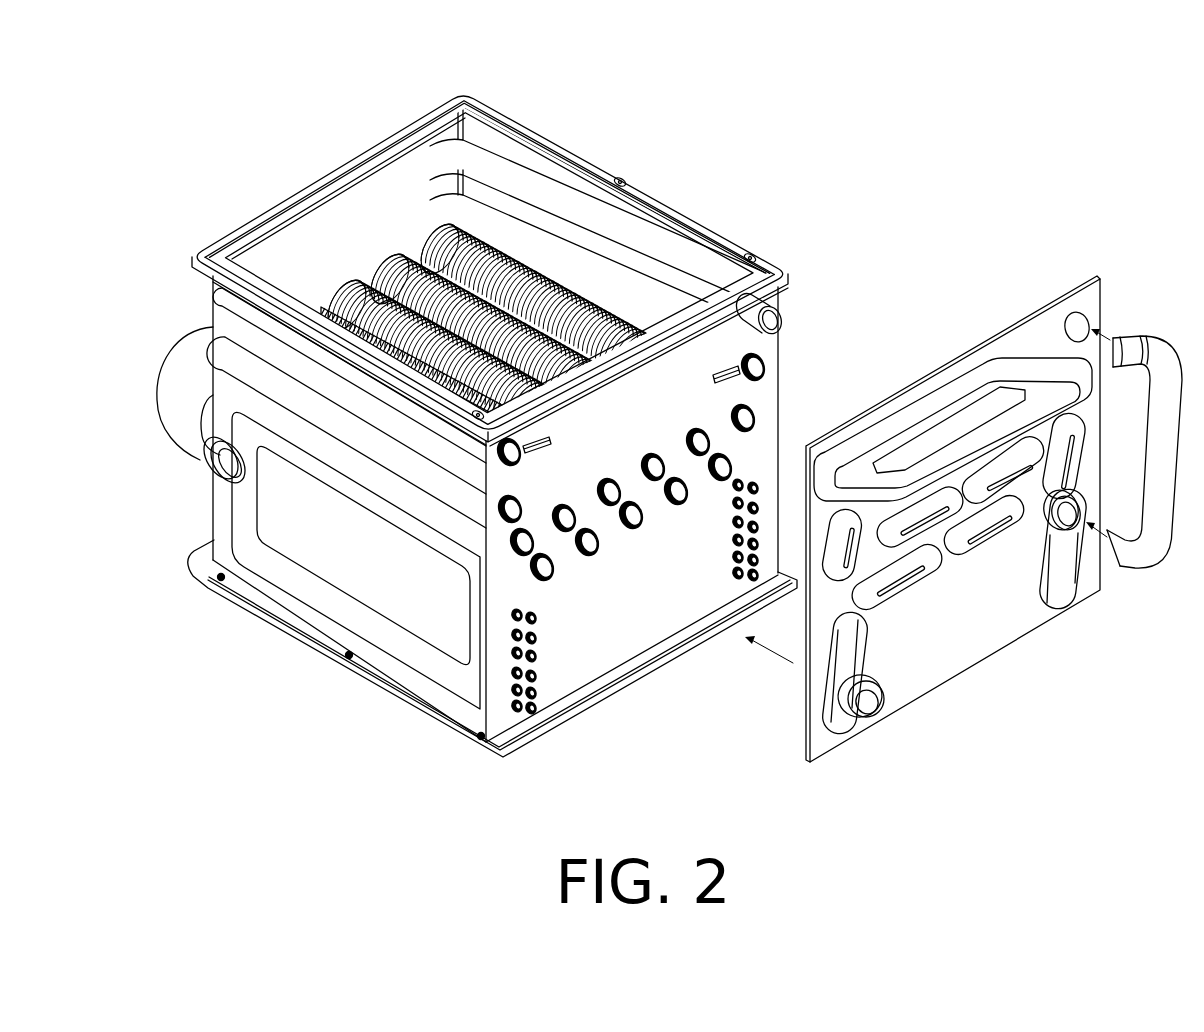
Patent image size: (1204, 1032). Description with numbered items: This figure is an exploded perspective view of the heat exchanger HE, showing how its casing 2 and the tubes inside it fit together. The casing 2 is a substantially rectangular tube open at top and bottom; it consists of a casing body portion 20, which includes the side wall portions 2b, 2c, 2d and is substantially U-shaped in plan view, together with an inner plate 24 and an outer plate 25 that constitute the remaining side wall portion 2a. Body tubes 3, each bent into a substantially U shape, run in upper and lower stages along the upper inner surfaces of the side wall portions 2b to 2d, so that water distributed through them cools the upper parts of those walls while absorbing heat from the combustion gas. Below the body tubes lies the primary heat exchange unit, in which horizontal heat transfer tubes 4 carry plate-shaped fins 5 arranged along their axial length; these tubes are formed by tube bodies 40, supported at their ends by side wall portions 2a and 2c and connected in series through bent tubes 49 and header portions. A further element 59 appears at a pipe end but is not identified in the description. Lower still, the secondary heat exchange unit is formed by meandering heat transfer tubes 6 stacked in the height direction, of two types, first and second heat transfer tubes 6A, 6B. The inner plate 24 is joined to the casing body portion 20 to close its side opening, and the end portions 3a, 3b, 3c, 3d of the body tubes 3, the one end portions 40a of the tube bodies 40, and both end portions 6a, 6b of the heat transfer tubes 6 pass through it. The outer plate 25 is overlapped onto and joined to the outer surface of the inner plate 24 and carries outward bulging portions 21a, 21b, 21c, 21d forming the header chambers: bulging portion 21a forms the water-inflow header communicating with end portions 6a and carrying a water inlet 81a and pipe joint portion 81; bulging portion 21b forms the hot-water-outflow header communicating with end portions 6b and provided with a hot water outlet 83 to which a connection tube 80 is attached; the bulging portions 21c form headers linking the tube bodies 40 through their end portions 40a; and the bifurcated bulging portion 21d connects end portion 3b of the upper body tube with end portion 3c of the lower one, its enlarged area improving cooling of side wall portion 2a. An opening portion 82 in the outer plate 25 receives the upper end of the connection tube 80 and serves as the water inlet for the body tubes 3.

The heat exchanger HE is at (370, 80).
The casing 2 is at (305, 174).
The side wall portion 2a is at (850, 262).
The side wall portion 2b is at (623, 200).
The side wall portion 2c is at (272, 228).
The side wall portion 2d is at (340, 578).
The body tube 3 is at (522, 225).
The end portion of body tube 3a is at (511, 496).
The end portion of body tube 3b is at (526, 438).
The end portion of body tube 3c is at (768, 374).
The end portion of body tube 3d is at (777, 312).
The heat transfer tube 4 is at (710, 428).
The fin 5 is at (476, 234).
The heat transfer tube 6 is at (692, 569).
The first heat transfer tube 6A is at (734, 518).
The second heat transfer tube 6B is at (734, 573).
The end portion of heat transfer tube 6a is at (532, 618).
The end portion of heat transfer tube 6b is at (750, 484).
The casing body portion 20 is at (386, 142).
The bulging portion 21a is at (848, 640).
The bulging portion 21b is at (1060, 590).
The bulging portion 21c is at (1075, 434).
The bulging portion 21d is at (980, 440).
The inner plate 24 is at (785, 340).
The outer plate 25 is at (1020, 340).
The tube body 40 is at (589, 528).
The end portion of tube body 40a is at (632, 502).
The bent tube 49 is at (203, 355).
The pipe flange 59 is at (225, 470).
The connection tube 80 is at (1143, 548).
The pipe joint portion 81 is at (875, 680).
The water inlet 81a is at (868, 718).
The opening portion 82 is at (1088, 322).
The hot water outlet 83 is at (1070, 512).